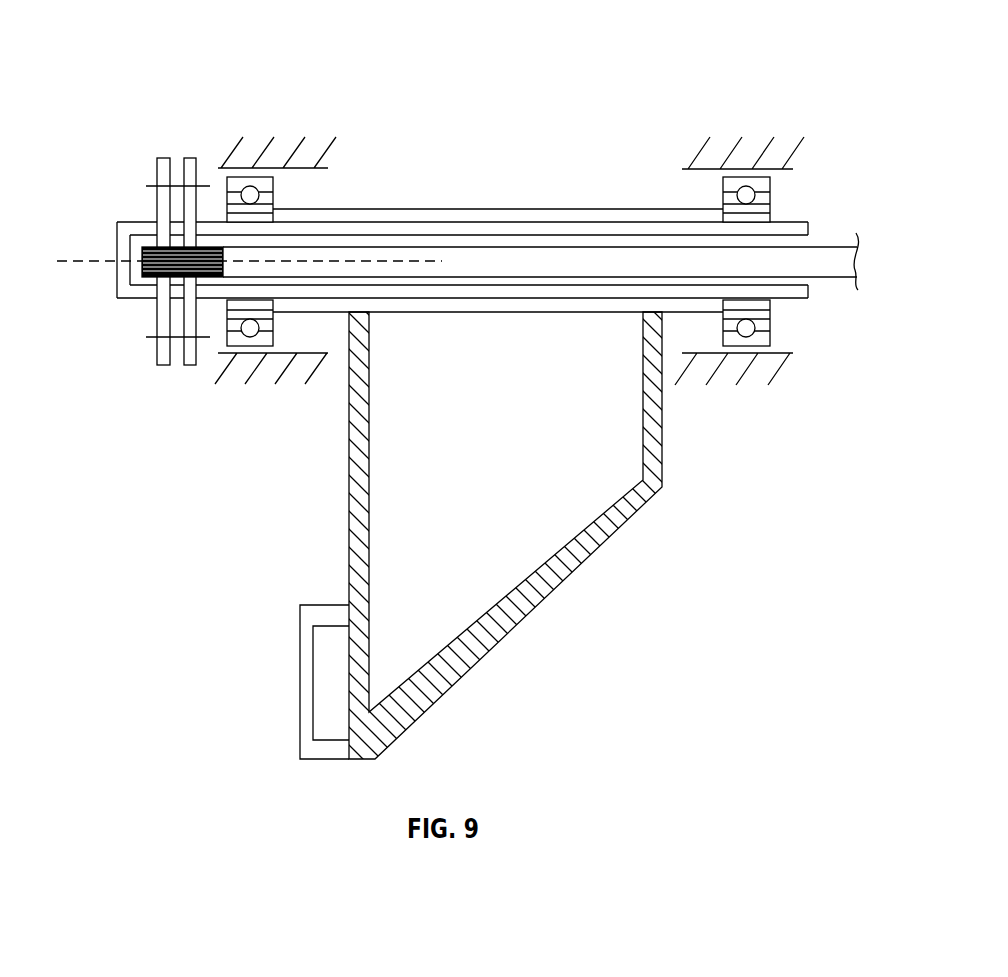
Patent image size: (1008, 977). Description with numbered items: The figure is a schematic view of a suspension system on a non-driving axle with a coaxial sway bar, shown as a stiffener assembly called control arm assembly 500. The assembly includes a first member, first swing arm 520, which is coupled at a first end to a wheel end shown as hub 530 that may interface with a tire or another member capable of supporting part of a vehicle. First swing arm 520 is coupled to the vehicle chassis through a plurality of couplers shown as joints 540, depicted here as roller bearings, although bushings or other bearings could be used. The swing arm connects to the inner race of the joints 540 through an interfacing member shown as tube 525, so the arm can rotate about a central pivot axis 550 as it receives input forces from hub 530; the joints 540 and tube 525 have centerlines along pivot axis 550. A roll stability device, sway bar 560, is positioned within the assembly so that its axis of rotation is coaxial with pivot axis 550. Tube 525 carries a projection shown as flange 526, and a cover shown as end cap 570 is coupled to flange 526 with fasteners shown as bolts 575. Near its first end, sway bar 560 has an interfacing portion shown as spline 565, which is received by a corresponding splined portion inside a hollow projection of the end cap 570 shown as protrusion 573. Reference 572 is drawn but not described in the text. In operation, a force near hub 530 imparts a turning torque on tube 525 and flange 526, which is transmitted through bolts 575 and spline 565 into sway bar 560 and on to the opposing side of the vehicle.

The control arm assembly 500 is at (146, 36).
The first swing arm 520 is at (480, 548).
The tube 525 is at (487, 208).
The flange 526 is at (190, 160).
The hub 530 is at (335, 689).
The joints 540 is at (290, 199).
The pivot axis 550 is at (98, 263).
The sway bar 560 is at (808, 270).
The spline 565 is at (153, 277).
The end cap 570 is at (137, 225).
The fastener 572 is at (158, 200).
The protrusion 573 is at (122, 253).
The bolts 575 is at (155, 183).